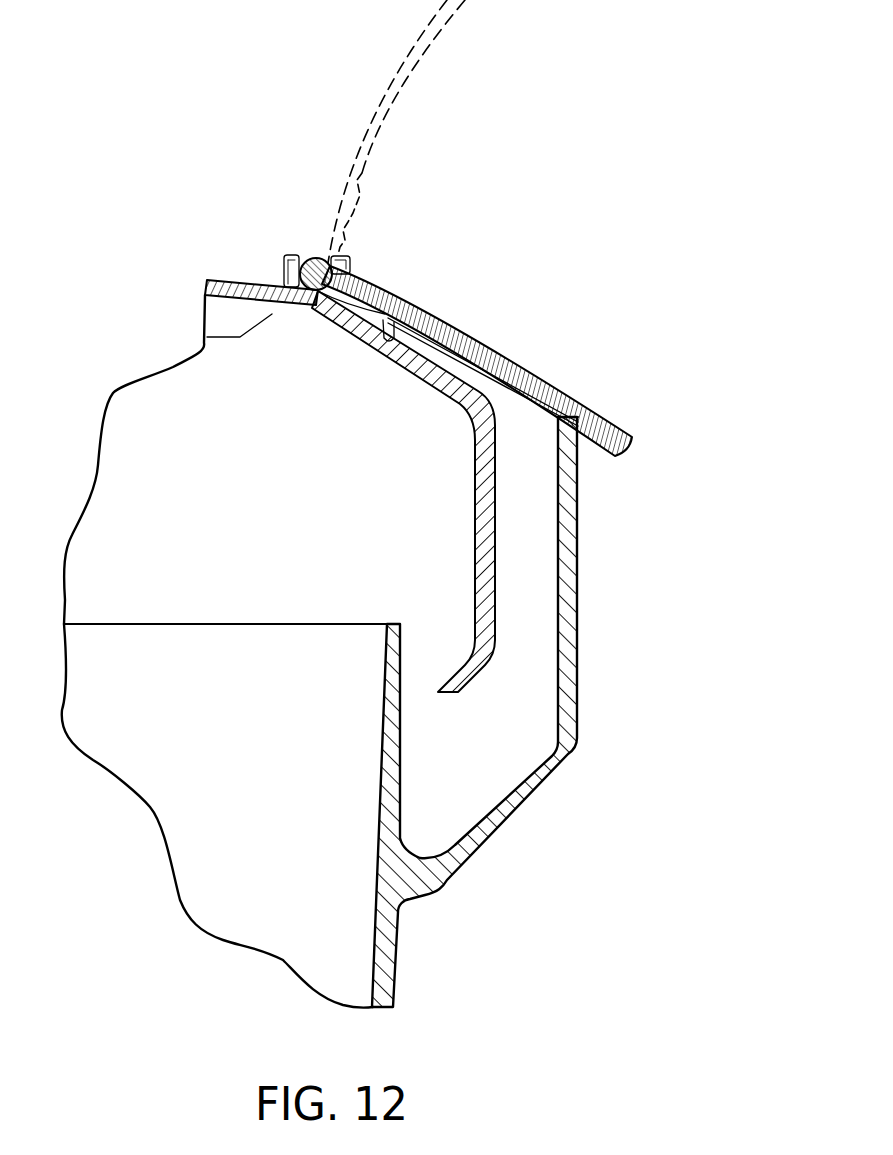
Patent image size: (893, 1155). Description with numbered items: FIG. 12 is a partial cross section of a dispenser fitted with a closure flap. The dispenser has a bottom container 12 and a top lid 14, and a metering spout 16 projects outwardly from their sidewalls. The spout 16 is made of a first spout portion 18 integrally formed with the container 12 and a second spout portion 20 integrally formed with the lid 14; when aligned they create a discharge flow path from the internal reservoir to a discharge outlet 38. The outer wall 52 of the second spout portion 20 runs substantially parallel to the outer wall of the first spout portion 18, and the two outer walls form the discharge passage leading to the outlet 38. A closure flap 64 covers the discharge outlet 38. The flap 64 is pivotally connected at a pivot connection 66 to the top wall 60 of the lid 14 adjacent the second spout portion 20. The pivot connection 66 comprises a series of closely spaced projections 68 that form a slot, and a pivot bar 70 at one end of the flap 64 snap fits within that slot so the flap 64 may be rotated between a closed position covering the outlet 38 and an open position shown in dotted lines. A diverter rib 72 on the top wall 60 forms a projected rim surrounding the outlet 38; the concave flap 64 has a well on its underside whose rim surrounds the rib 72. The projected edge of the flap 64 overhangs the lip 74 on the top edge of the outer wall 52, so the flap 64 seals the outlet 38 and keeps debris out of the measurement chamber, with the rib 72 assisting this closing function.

The container 12 is at (120, 750).
The lid 14 is at (191, 385).
The metering spout 16 is at (522, 649).
The first spout portion 18 is at (552, 712).
The second spout portion 20 is at (507, 535).
The discharge outlet 38 is at (513, 420).
The outer wall 52 is at (567, 575).
The top wall of the lid 60 is at (234, 280).
The closure flap 64 is at (530, 362).
The pivot connection 66 is at (317, 244).
The projections 68 is at (285, 255).
The pivot bar 70 is at (314, 292).
The diverter rib 72 is at (383, 310).
The lip 74 is at (582, 427).